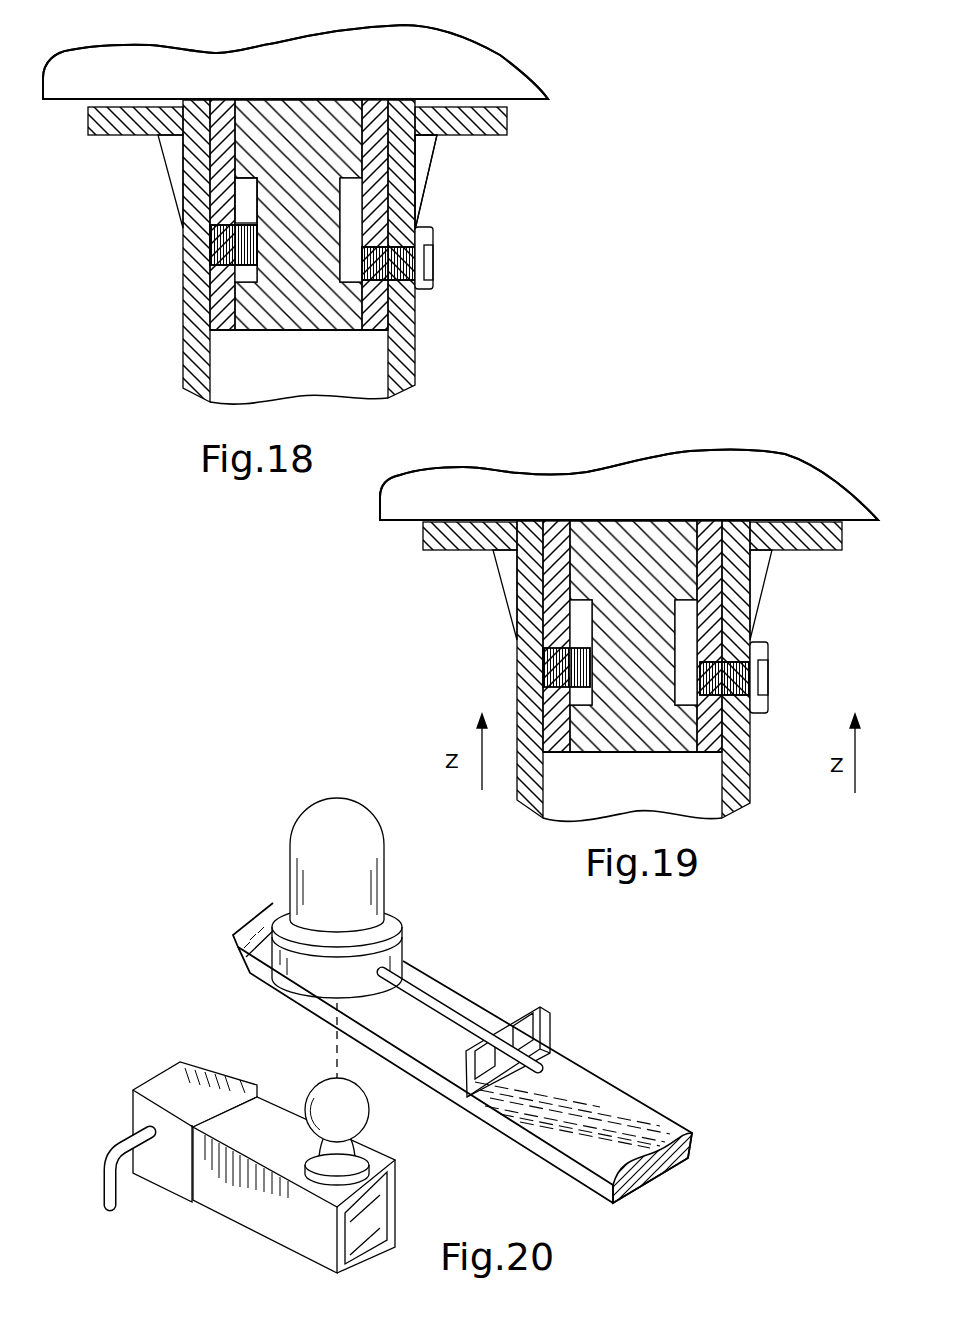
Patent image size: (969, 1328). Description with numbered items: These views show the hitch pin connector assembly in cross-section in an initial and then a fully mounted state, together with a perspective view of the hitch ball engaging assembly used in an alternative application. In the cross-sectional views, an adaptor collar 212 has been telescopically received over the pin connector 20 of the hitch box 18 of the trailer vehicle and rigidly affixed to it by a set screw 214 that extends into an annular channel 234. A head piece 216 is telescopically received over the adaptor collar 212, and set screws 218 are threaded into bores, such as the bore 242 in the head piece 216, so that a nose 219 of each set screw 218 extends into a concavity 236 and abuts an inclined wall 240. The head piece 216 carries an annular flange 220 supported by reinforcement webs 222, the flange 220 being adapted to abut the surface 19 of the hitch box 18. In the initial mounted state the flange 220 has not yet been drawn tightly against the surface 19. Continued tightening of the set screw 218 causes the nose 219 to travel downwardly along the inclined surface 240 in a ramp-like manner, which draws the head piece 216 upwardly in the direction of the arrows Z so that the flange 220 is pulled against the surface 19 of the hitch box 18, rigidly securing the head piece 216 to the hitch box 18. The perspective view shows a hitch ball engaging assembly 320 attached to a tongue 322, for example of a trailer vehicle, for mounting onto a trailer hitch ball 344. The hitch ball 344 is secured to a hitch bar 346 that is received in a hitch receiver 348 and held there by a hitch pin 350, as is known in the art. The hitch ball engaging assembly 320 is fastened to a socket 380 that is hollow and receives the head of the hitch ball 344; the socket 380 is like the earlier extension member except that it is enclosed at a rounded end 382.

In FIG. 18, the hitch box 18 is at (331, 80).
In FIG. 19, the hitch box 18 is at (667, 508).
In FIG. 18, the surface 19 is at (508, 124).
In FIG. 19, the surface 19 is at (755, 533).
In FIG. 18, the pin connector 20 is at (338, 320).
In FIG. 18, the adaptor collar 212 is at (393, 167).
In FIG. 18, the set screw 214 is at (235, 262).
In FIG. 18, the head piece 216 is at (400, 362).
In FIG. 19, the head piece 216 is at (530, 683).
In FIG. 18, the set screw 218 is at (418, 238).
In FIG. 19, the set screw 218 is at (760, 652).
In FIG. 18, the nose 219 is at (380, 238).
In FIG. 19, the nose 219 is at (705, 662).
In FIG. 18, the annular flange 220 is at (476, 132).
In FIG. 19, the annular flange 220 is at (477, 552).
In FIG. 18, the reinforcement webs 222 is at (425, 152).
In FIG. 18, the annular channel 234 is at (238, 202).
In FIG. 18, the concavity 236 is at (417, 218).
In FIG. 18, the inclined wall 240 is at (400, 290).
In FIG. 19, the inclined wall 240 is at (715, 706).
In FIG. 18, the bore 242 is at (433, 265).
In FIG. 20, the hitch ball engaging assembly 320 is at (447, 966).
In FIG. 20, the tongue 322 is at (590, 1100).
In FIG. 20, the trailer hitch ball 344 is at (385, 1137).
In FIG. 20, the hitch bar 346 is at (288, 1213).
In FIG. 20, the hitch receiver 348 is at (207, 1068).
In FIG. 20, the hitch pin 350 is at (113, 1185).
In FIG. 20, the socket 380 is at (290, 880).
In FIG. 20, the rounded end 382 is at (343, 830).